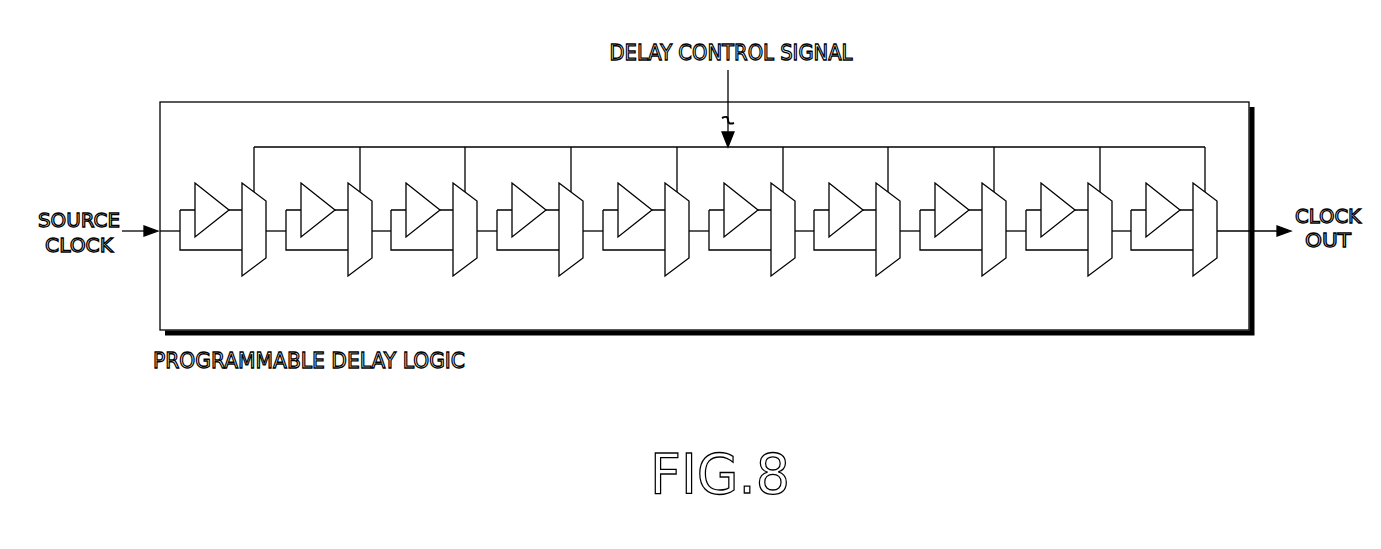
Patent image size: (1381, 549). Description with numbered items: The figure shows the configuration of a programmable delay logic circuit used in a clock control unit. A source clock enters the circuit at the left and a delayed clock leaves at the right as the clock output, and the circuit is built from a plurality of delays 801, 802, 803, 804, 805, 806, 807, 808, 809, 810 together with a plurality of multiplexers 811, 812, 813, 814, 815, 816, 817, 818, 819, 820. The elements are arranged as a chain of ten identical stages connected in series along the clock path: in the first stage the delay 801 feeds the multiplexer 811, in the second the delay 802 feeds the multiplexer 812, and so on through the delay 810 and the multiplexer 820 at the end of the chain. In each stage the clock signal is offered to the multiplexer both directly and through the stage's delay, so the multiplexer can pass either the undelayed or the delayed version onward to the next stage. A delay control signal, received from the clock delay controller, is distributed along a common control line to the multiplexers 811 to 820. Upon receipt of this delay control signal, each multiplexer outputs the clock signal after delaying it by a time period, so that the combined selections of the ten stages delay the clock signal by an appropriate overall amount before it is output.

The delay 801 is at (207, 192).
The delay 802 is at (313, 192).
The delay 803 is at (418, 192).
The delay 804 is at (524, 192).
The delay 805 is at (630, 192).
The delay 806 is at (736, 192).
The delay 807 is at (841, 192).
The delay 808 is at (947, 192).
The delay 809 is at (1053, 192).
The delay 810 is at (1158, 192).
The multiplexer 811 is at (254, 267).
The multiplexer 812 is at (360, 267).
The multiplexer 813 is at (465, 267).
The multiplexer 814 is at (571, 267).
The multiplexer 815 is at (677, 267).
The multiplexer 816 is at (783, 267).
The multiplexer 817 is at (888, 267).
The multiplexer 818 is at (994, 267).
The multiplexer 819 is at (1100, 267).
The multiplexer 820 is at (1205, 267).